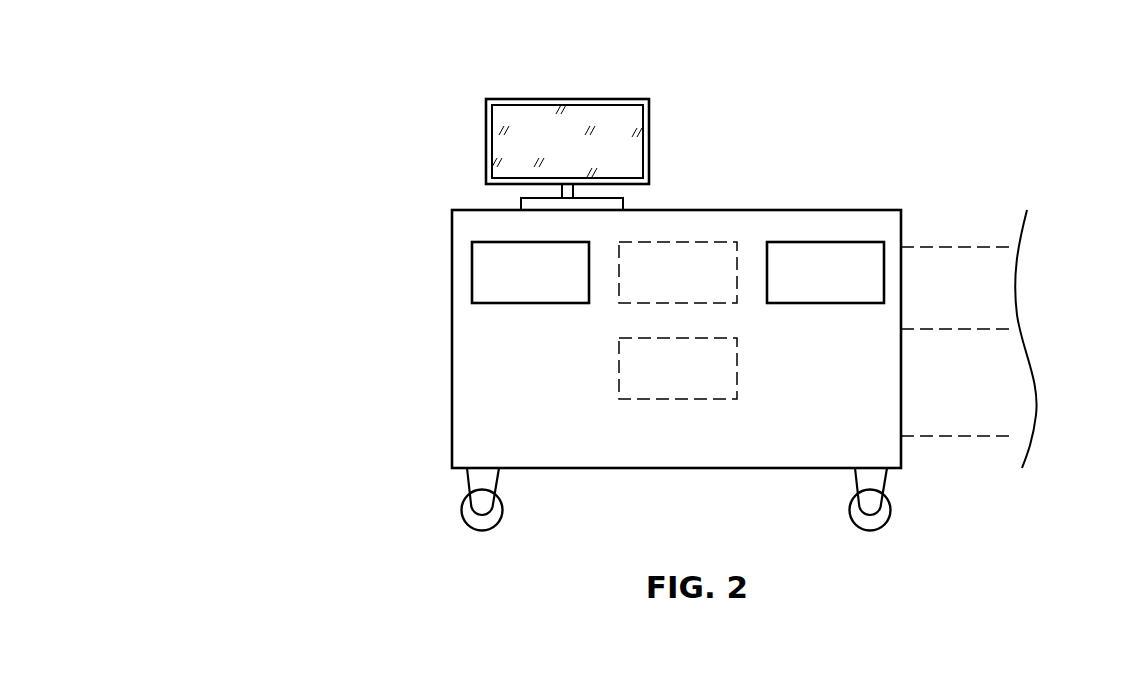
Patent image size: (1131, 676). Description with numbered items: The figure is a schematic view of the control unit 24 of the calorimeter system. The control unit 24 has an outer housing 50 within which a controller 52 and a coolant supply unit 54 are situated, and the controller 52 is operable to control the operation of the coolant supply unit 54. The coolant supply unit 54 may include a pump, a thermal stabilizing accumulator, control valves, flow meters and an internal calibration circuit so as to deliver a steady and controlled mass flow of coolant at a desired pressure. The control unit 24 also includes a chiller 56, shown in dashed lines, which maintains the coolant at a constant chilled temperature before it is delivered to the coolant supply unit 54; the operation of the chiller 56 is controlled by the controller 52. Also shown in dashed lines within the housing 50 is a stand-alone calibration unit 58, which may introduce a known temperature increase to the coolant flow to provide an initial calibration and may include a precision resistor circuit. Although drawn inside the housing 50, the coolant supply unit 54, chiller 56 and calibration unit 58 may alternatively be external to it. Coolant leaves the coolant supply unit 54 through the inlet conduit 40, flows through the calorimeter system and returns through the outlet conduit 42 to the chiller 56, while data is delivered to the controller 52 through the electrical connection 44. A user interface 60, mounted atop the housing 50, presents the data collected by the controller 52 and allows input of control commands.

The control unit 24 is at (347, 163).
The inlet conduit 40 is at (990, 248).
The outlet conduit 42 is at (990, 436).
The electrical connection 44 is at (990, 330).
The outer housing 50 is at (877, 210).
The controller 52 is at (472, 256).
The coolant supply unit 54 is at (800, 242).
The chiller 56 is at (708, 241).
The calibration unit 58 is at (619, 366).
The user interface 60 is at (612, 99).